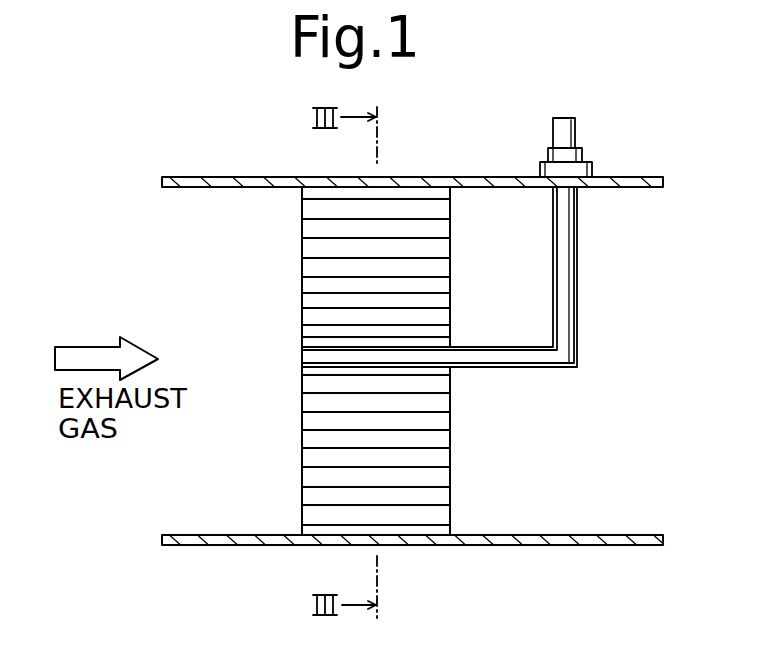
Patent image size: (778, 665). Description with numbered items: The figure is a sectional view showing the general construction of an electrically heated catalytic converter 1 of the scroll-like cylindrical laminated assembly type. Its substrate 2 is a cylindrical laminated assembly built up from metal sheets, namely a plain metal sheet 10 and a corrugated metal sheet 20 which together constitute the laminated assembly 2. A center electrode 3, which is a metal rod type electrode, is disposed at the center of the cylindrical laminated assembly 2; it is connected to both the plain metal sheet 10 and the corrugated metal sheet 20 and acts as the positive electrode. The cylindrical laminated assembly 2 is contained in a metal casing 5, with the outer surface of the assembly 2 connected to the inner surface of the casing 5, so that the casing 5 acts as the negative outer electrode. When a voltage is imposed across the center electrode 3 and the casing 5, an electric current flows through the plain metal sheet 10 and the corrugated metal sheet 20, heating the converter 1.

The electrically heated catalytic converter 1 is at (457, 138).
The substrate 2 is at (452, 458).
The center electrode 3 is at (578, 263).
The metal casing 5 is at (232, 177).
The plain metal sheet 10 is at (430, 517).
The corrugated metal sheet 20 is at (462, 580).